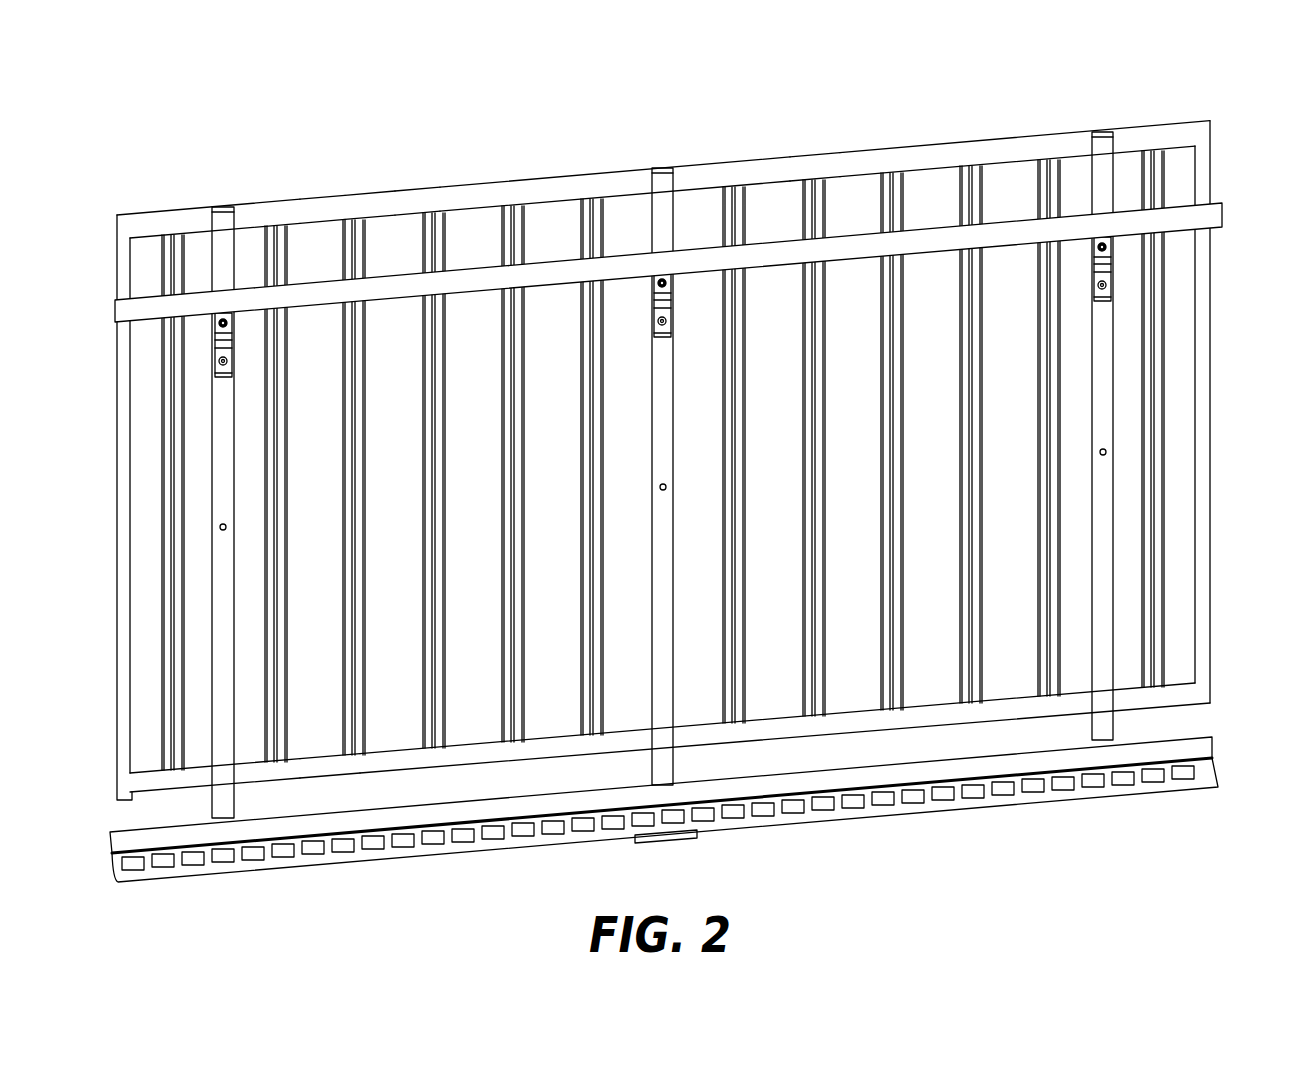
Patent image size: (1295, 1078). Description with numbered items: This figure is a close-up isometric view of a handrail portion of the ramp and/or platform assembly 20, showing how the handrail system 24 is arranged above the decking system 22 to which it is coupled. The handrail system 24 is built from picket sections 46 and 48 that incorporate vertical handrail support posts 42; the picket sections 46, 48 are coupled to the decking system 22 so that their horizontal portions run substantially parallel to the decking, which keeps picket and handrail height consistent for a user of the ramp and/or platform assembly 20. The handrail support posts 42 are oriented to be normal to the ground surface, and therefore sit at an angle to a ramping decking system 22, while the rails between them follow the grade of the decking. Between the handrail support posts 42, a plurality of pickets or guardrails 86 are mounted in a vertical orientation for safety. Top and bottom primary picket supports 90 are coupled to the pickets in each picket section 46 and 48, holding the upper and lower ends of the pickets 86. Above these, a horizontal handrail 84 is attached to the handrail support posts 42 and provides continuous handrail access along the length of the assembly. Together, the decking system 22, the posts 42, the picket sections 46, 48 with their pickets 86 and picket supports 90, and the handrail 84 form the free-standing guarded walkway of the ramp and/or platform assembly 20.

The ramp and/or platform assembly 20 is at (702, 473).
The decking system 22 is at (1203, 733).
The handrail system 24 is at (686, 500).
The handrail support post 42 is at (213, 255).
The picket section 46 is at (322, 198).
The picket section 48 is at (816, 150).
The horizontal handrail 84 is at (257, 287).
The picket 86 is at (900, 332).
The primary picket support 90 is at (412, 190).